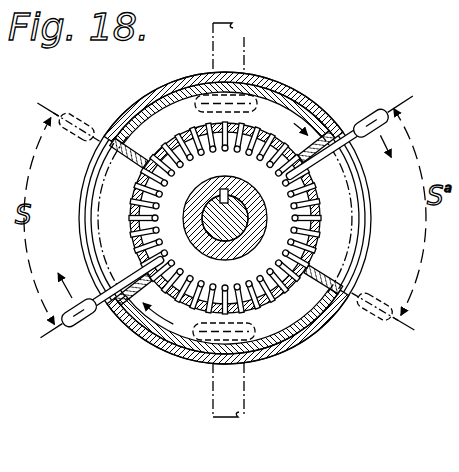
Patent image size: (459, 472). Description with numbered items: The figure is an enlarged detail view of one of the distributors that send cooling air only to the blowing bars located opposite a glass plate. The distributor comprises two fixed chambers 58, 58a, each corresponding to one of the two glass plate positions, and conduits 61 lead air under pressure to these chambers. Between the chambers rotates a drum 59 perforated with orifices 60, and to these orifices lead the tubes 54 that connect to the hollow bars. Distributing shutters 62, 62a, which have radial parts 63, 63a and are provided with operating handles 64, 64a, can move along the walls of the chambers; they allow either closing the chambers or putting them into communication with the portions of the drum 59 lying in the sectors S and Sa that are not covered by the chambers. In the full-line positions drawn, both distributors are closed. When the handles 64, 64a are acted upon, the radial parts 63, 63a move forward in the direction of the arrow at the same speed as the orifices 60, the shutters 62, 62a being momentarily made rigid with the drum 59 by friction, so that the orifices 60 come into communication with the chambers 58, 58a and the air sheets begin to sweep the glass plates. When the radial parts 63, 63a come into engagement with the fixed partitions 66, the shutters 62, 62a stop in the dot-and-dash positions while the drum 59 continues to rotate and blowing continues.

The tube 54 is at (282, 176).
The fixed chamber 58 is at (296, 332).
The fixed chamber 58a is at (157, 110).
The drum 59 is at (135, 207).
The orifice 60 is at (322, 240).
The conduit 61 is at (245, 43).
The distributing shutter 62 is at (150, 343).
The distributing shutter 62a is at (298, 112).
The radial part 63 is at (131, 283).
The radial part 63a is at (333, 160).
The operating handle 64 is at (90, 326).
The operating handle 64a is at (372, 108).
The fixed partition 66 is at (147, 157).